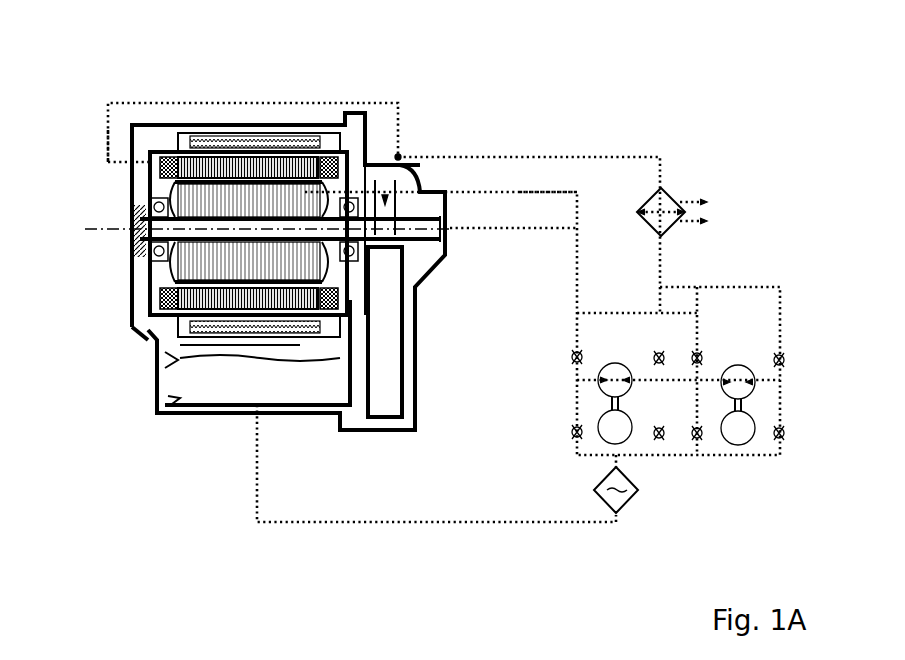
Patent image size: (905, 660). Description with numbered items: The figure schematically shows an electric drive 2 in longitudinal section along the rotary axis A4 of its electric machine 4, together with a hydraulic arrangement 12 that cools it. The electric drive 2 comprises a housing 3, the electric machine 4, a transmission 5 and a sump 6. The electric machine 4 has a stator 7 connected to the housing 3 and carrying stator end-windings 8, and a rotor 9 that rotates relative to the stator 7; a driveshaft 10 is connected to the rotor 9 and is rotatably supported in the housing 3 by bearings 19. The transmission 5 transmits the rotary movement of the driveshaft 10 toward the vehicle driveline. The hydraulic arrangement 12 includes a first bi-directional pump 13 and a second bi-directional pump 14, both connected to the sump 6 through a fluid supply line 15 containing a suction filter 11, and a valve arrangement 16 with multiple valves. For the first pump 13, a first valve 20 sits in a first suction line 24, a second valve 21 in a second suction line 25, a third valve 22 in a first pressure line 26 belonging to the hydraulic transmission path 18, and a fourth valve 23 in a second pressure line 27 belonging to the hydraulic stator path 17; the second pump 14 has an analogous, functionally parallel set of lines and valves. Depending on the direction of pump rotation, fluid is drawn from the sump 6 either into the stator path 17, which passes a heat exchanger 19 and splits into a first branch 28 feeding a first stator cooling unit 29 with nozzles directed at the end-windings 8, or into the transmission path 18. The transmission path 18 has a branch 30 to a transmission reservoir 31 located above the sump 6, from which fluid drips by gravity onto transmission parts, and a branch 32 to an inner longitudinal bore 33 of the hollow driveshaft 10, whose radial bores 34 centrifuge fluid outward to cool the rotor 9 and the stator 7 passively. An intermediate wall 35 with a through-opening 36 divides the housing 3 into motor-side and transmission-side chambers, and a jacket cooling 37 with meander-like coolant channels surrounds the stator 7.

The electric drive 2 is at (462, 68).
The housing 3 is at (347, 158).
The electric machine 4 is at (223, 122).
The transmission 5 is at (375, 165).
The sump 6 is at (175, 398).
The stator 7 is at (243, 168).
The stator end-windings 8 is at (165, 160).
The rotor 9 is at (262, 208).
The driveshaft 10 is at (160, 270).
The suction filter 11 is at (612, 512).
The hydraulic arrangement 12 is at (690, 133).
The first bi-directional pump 13 is at (615, 367).
The second bi-directional pump 14 is at (740, 365).
The fluid supply line 15 is at (398, 523).
The valve arrangement 16 is at (548, 432).
The hydraulic stator path 17 is at (605, 157).
The hydraulic transmission path 18 is at (577, 275).
The heat exchanger 19 is at (148, 208).
The first valve 20 is at (575, 442).
The second valve 21 is at (655, 457).
The third valve 22 is at (572, 357).
The fourth valve 23 is at (662, 353).
The first suction line 24 is at (574, 428).
The second suction line 25 is at (661, 440).
The first pressure line 26 is at (575, 347).
The second pressure line 27 is at (655, 352).
The first branch 28 is at (128, 103).
The first stator cooling unit 29 is at (108, 110).
The branch 30 is at (528, 190).
The transmission reservoir 31 is at (415, 165).
The branch 32 is at (483, 228).
The inner longitudinal bore 33 is at (150, 236).
The radial bore 34 is at (155, 260).
The intermediate wall 35 is at (370, 313).
The through-opening 36 is at (365, 353).
The jacket cooling 37 is at (233, 350).
The rotary axis A4 is at (88, 229).